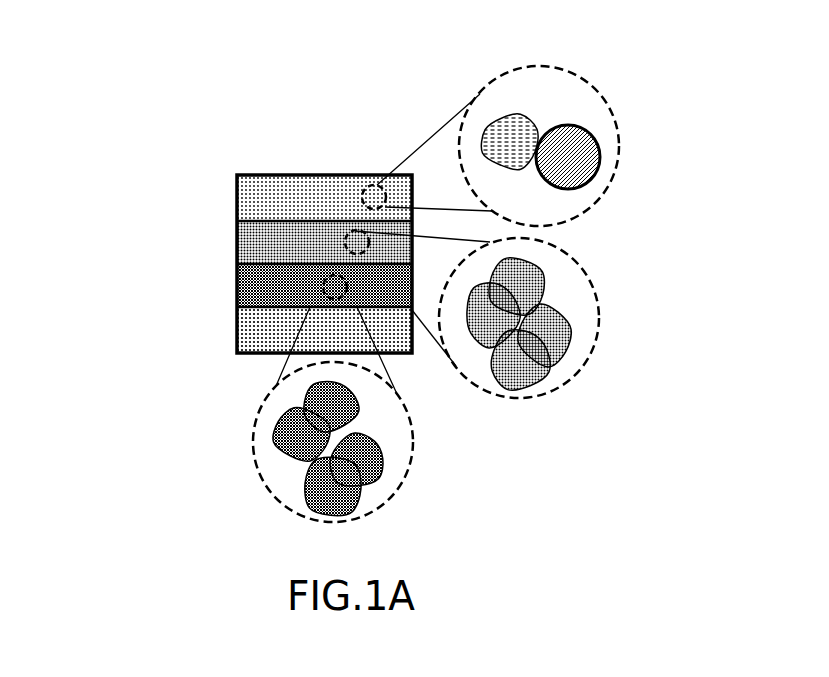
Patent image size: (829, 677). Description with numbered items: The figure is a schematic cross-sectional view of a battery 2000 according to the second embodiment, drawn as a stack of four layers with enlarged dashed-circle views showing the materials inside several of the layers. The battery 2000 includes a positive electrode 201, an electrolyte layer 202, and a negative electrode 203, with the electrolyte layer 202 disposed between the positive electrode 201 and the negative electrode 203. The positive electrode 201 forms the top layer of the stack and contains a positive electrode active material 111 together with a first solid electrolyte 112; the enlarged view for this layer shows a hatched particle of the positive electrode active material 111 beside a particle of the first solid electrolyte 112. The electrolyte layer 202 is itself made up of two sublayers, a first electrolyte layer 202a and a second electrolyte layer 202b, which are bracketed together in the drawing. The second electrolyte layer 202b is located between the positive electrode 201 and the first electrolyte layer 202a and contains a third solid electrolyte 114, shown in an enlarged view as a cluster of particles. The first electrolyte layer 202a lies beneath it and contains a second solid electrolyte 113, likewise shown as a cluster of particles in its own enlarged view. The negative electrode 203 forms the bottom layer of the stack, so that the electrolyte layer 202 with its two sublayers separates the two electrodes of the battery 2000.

The battery 2000 is at (360, 137).
The positive electrode 201 is at (260, 195).
The electrolyte layer 202 is at (271, 264).
The first electrolyte layer 202a is at (257, 287).
The second electrolyte layer 202b is at (260, 237).
The negative electrode 203 is at (253, 333).
The positive electrode active material 111 is at (598, 156).
The first solid electrolyte 112 is at (510, 137).
The second solid electrolyte 113 is at (382, 454).
The third solid electrolyte 114 is at (560, 330).